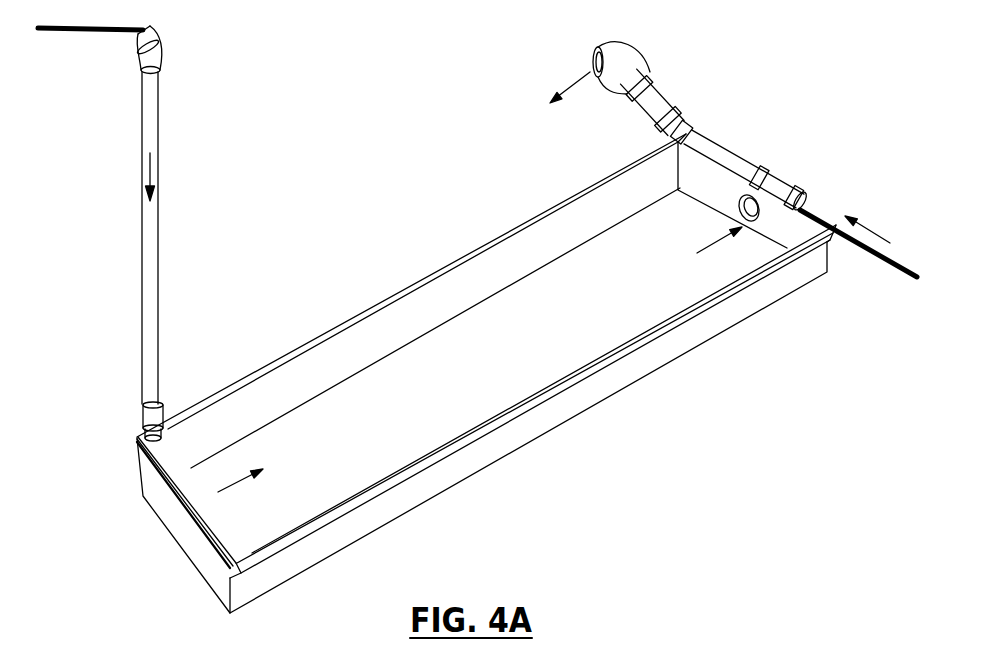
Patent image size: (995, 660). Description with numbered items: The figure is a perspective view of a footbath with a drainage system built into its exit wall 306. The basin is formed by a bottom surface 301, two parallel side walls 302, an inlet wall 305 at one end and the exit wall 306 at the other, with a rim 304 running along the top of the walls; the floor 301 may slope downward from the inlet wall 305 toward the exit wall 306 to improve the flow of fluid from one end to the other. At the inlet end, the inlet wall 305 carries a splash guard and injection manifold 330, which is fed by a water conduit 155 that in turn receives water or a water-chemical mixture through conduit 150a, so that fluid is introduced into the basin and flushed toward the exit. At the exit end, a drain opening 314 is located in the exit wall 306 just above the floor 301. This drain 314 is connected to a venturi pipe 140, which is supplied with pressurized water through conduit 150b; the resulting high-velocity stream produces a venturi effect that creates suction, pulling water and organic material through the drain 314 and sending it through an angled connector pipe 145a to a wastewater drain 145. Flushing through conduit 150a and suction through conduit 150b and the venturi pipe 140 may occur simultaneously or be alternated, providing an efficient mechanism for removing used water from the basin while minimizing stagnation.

The venturi pipe 140 is at (780, 177).
The wastewater drain 145 is at (594, 60).
The angled connector pipe 145a is at (648, 103).
The conduit 150a is at (102, 33).
The conduit 150b is at (882, 263).
The water conduit 155 is at (158, 328).
The bottom surface 301 is at (468, 412).
The side walls 302 is at (392, 327).
The rim 304 is at (728, 290).
The inlet wall 305 is at (158, 490).
The exit wall 306 is at (717, 186).
The drain opening 314 is at (765, 201).
The splash guard and injection manifold 330 is at (176, 462).